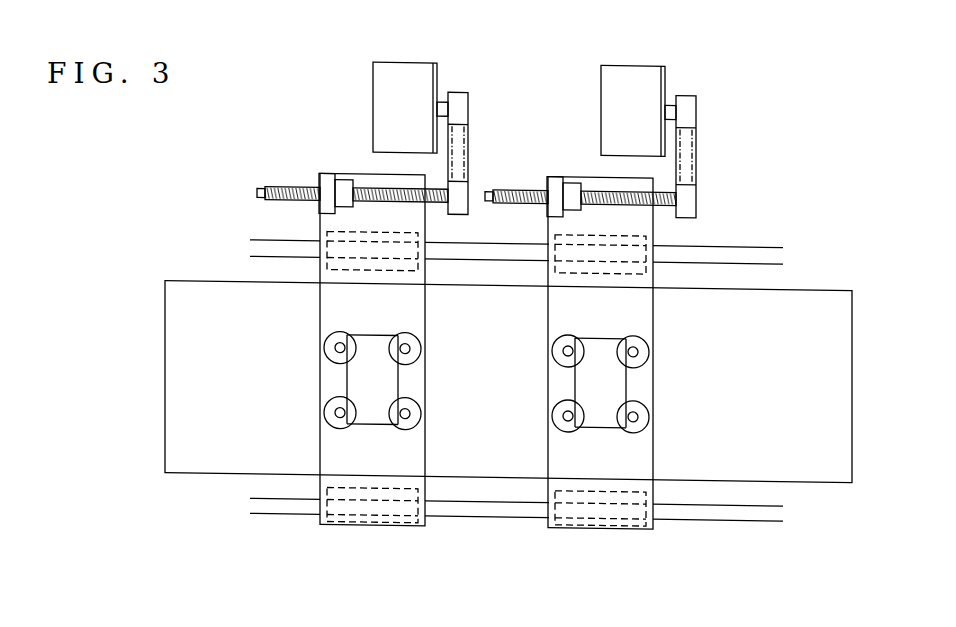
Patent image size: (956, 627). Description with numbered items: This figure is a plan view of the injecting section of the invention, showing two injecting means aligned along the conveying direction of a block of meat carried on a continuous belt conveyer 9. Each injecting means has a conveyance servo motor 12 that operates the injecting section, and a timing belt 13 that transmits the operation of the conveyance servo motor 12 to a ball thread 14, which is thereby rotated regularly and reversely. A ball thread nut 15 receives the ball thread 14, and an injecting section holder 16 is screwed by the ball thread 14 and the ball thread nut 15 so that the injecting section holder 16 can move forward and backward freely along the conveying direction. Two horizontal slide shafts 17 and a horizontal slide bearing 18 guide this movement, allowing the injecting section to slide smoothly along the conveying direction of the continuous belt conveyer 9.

The continuous belt conveyer 9 is at (831, 286).
The conveyance servo motor 12 is at (408, 64).
The timing belt 13 is at (470, 136).
The ball thread 14 is at (287, 190).
The ball thread nut 15 is at (325, 176).
The injecting section holder 16 is at (315, 219).
The horizontal slide shafts 17 is at (737, 517).
The horizontal slide bearing 18 is at (599, 529).